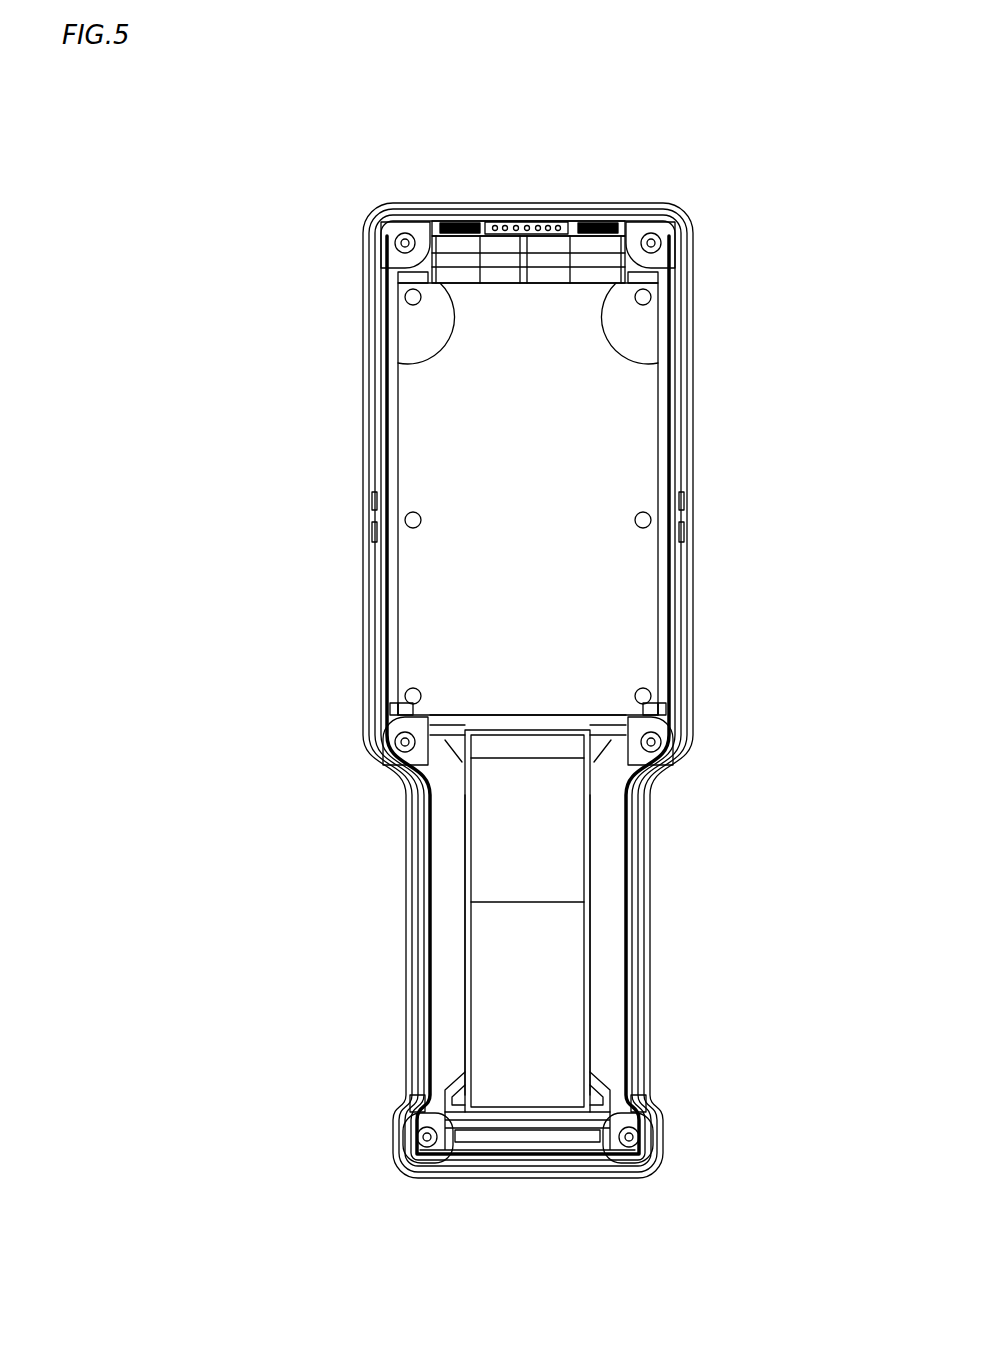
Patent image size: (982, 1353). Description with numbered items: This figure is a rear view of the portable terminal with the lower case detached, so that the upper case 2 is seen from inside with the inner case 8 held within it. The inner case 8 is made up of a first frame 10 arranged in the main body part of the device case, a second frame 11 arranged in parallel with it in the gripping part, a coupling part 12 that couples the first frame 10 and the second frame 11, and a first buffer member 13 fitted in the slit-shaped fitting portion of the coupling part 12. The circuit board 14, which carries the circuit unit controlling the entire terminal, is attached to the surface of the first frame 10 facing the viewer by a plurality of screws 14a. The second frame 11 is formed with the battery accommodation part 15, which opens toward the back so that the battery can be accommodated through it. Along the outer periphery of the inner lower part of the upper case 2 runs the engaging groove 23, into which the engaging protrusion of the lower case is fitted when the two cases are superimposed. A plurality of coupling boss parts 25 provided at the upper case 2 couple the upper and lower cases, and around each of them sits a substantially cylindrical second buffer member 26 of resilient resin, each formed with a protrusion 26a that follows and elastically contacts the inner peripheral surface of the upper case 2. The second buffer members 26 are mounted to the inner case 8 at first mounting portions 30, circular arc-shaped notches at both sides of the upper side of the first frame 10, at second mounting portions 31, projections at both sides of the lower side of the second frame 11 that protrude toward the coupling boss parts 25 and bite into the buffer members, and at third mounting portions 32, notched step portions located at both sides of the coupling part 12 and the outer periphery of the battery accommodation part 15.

The upper case 2 is at (572, 198).
The inner case 8 is at (449, 885).
The first frame 10 is at (545, 222).
The second frame 11 is at (465, 940).
The coupling part 12 is at (560, 735).
The first buffer member 13 is at (527, 722).
The circuit board 14 is at (630, 430).
The screws 14a is at (405, 298).
The battery accommodation part 15 is at (610, 935).
The engaging groove 23 is at (372, 578).
The coupling boss parts 25 is at (398, 222).
The second buffer members 26 is at (380, 249).
The protrusion 26a is at (442, 222).
The first mounting portions 30 is at (428, 360).
The second mounting portions 31 is at (450, 1085).
The third mounting portions 32 is at (392, 707).